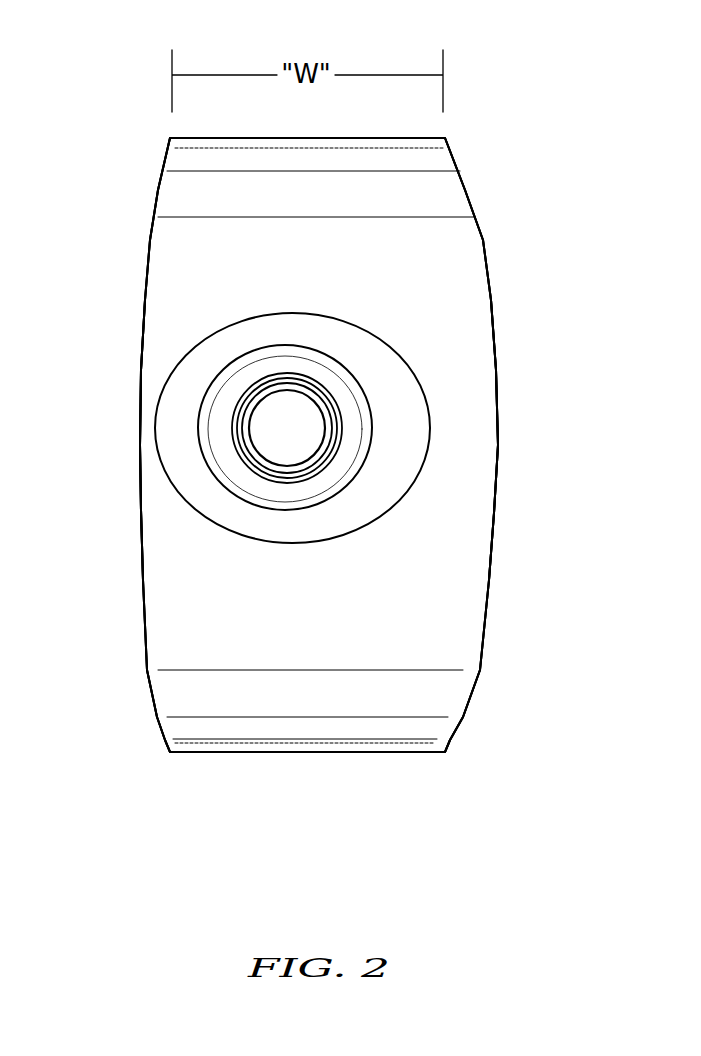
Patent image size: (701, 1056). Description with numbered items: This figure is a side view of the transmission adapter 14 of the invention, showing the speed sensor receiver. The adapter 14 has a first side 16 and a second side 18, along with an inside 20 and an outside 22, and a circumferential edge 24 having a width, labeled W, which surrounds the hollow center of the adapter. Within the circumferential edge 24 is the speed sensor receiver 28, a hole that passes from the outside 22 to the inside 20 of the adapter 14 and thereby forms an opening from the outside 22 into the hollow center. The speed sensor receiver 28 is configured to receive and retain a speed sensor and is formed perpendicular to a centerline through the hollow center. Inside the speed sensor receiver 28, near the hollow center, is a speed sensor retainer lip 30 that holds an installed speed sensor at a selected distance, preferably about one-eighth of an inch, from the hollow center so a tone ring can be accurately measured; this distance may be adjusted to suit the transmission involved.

The adapter 14 is at (472, 320).
The first side 16 is at (143, 338).
The second side 18 is at (497, 405).
The inside 20 is at (123, 450).
The outside 22 is at (331, 619).
The circumferential edge 24 is at (138, 548).
The speed sensor receiver 28 is at (333, 460).
The speed sensor retainer lip 30 is at (248, 413).